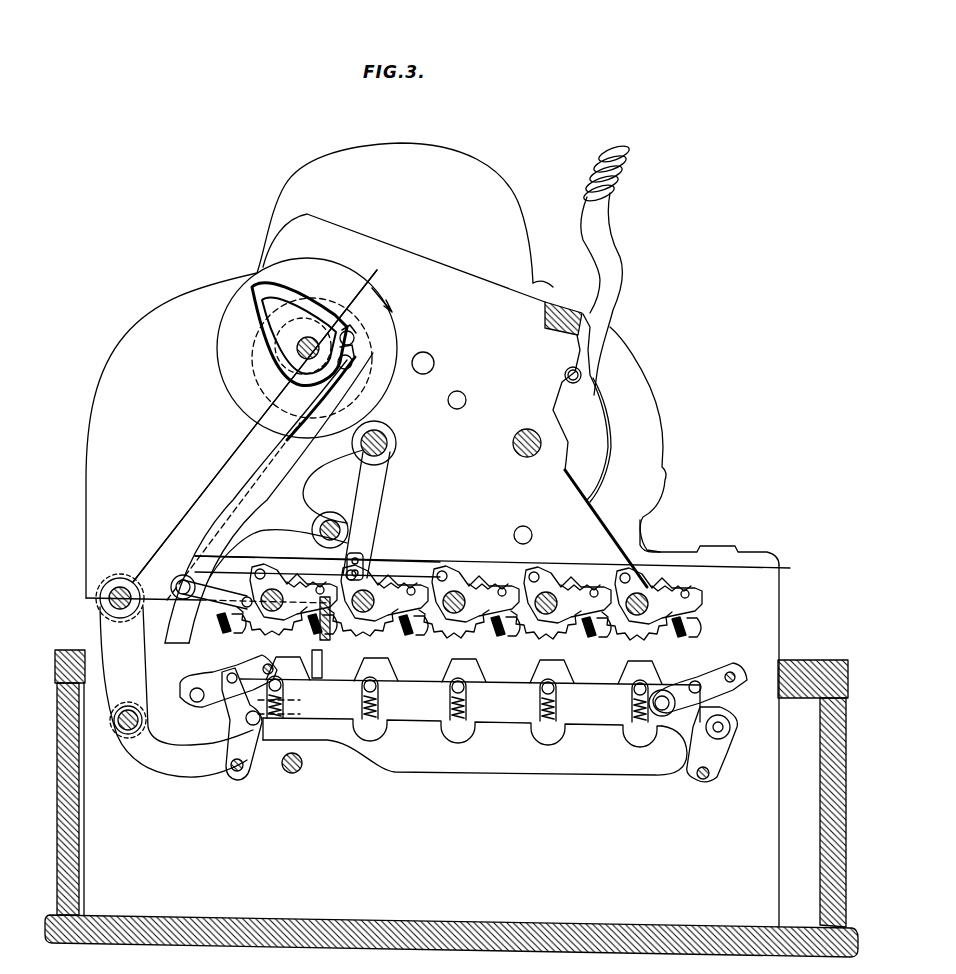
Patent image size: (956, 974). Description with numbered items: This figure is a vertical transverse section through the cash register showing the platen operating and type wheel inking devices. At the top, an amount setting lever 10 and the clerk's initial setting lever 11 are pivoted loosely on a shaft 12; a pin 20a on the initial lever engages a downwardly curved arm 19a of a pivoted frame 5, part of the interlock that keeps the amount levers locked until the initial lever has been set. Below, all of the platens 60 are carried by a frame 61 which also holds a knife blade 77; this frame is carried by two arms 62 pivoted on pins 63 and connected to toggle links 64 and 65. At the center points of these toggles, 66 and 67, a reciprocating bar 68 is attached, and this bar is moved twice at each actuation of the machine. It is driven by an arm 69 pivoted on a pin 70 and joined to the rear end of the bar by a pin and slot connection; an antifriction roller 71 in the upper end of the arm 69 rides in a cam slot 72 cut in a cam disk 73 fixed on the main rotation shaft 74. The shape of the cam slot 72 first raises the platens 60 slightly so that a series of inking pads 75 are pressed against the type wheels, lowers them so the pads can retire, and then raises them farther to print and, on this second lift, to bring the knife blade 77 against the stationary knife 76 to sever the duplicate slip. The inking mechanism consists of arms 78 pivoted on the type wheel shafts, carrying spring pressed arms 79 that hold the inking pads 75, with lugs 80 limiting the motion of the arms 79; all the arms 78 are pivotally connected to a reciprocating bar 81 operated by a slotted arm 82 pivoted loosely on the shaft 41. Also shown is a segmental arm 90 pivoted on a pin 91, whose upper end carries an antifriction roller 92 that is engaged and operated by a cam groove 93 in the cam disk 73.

The pivoted frame 5 is at (612, 318).
The amount setting lever 10 is at (598, 172).
The clerk's initial setting lever 11 is at (622, 268).
The shaft 12 is at (522, 432).
The downwardly curved arm 19a is at (608, 412).
The pin 20a is at (565, 375).
The shaft 41 is at (397, 444).
The platen 60 is at (440, 672).
The frame 61 is at (470, 711).
The arm 62 is at (208, 684).
The pin 63 is at (265, 664).
The toggle link 64 is at (727, 713).
The toggle link 65 is at (238, 700).
The toggle center point 66 is at (713, 730).
The toggle center point 67 is at (290, 722).
The reciprocating bar 68 is at (475, 750).
The arm 69 is at (182, 490).
The pin 70 is at (118, 580).
The antifriction roller 71 is at (420, 371).
The cam slot 72 is at (258, 333).
The cam disk 73 is at (225, 318).
The main rotation shaft 74 is at (287, 363).
The inking pad 75 is at (410, 633).
The stationary knife 76 is at (319, 625).
The knife blade 77 is at (322, 666).
The arm 78 is at (446, 578).
The spring pressed arm 79 is at (696, 630).
The lug 80 is at (700, 606).
The reciprocating bar 81 is at (383, 570).
The slotted arm 82 is at (366, 545).
The segmental arm 90 is at (305, 555).
The pin 91 is at (328, 520).
The antifriction roller 92 is at (262, 430).
The cam groove 93 is at (358, 338).